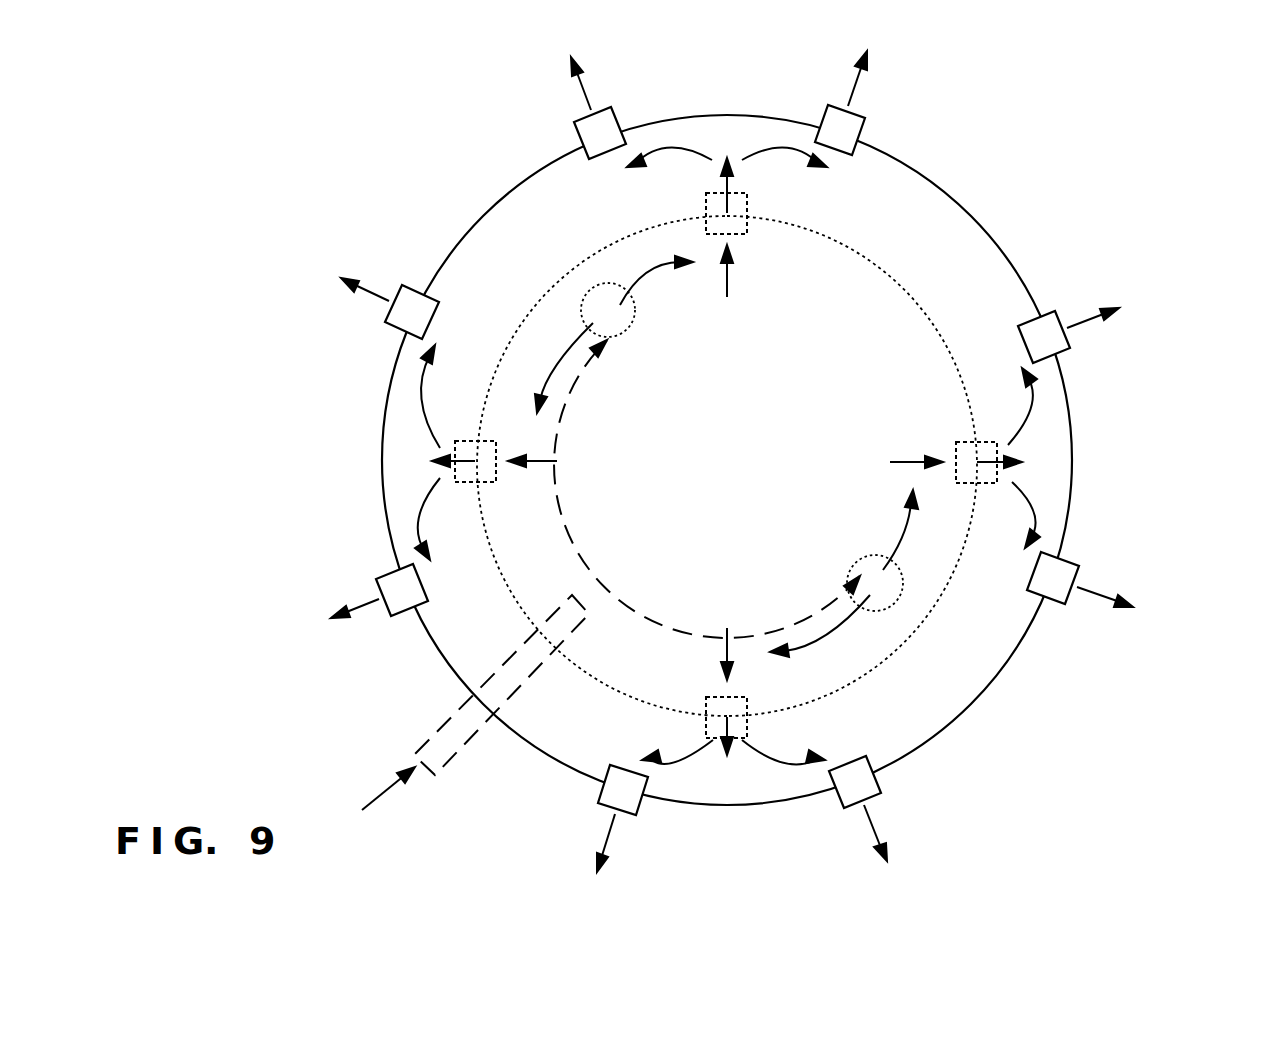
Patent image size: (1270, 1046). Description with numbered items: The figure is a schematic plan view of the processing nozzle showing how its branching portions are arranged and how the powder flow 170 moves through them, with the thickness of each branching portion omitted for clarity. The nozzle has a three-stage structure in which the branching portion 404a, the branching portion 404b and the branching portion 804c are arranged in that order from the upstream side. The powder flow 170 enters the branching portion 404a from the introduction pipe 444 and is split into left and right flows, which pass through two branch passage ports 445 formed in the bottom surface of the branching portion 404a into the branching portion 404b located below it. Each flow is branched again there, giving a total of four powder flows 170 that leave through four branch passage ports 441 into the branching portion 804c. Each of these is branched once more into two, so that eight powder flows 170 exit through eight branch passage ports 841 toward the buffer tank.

The powder flow 170 is at (578, 90).
The branch passage port 841 is at (860, 112).
The branch passage port 441 is at (997, 475).
The branch passage port 445 is at (583, 292).
The introduction pipe 444 is at (476, 734).
The branching portion 404a is at (917, 298).
The branching portion 404b is at (532, 308).
The branching portion 804c is at (1012, 652).